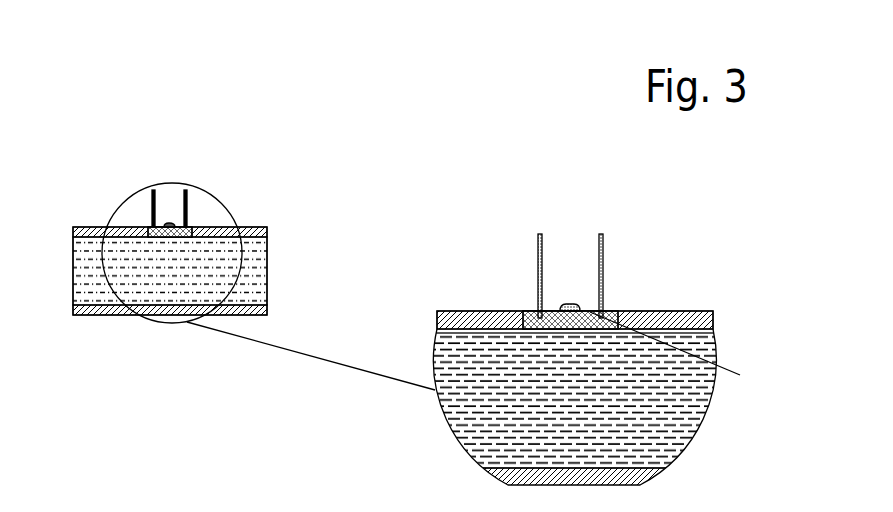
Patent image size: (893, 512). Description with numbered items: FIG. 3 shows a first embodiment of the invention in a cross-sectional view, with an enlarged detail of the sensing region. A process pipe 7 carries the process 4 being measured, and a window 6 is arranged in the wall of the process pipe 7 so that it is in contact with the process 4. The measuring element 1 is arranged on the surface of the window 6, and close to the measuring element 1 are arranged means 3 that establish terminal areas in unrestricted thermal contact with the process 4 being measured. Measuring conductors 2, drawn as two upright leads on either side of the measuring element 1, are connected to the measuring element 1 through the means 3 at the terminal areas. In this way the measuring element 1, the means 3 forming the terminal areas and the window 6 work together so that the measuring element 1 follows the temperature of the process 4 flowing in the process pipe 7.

The measuring element 1 is at (167, 222).
The measuring conductors 2 is at (153, 190).
The means establishing terminal areas 3 is at (530, 303).
The process 4 is at (73, 260).
The window 6 is at (150, 228).
The process pipe 7 is at (247, 228).